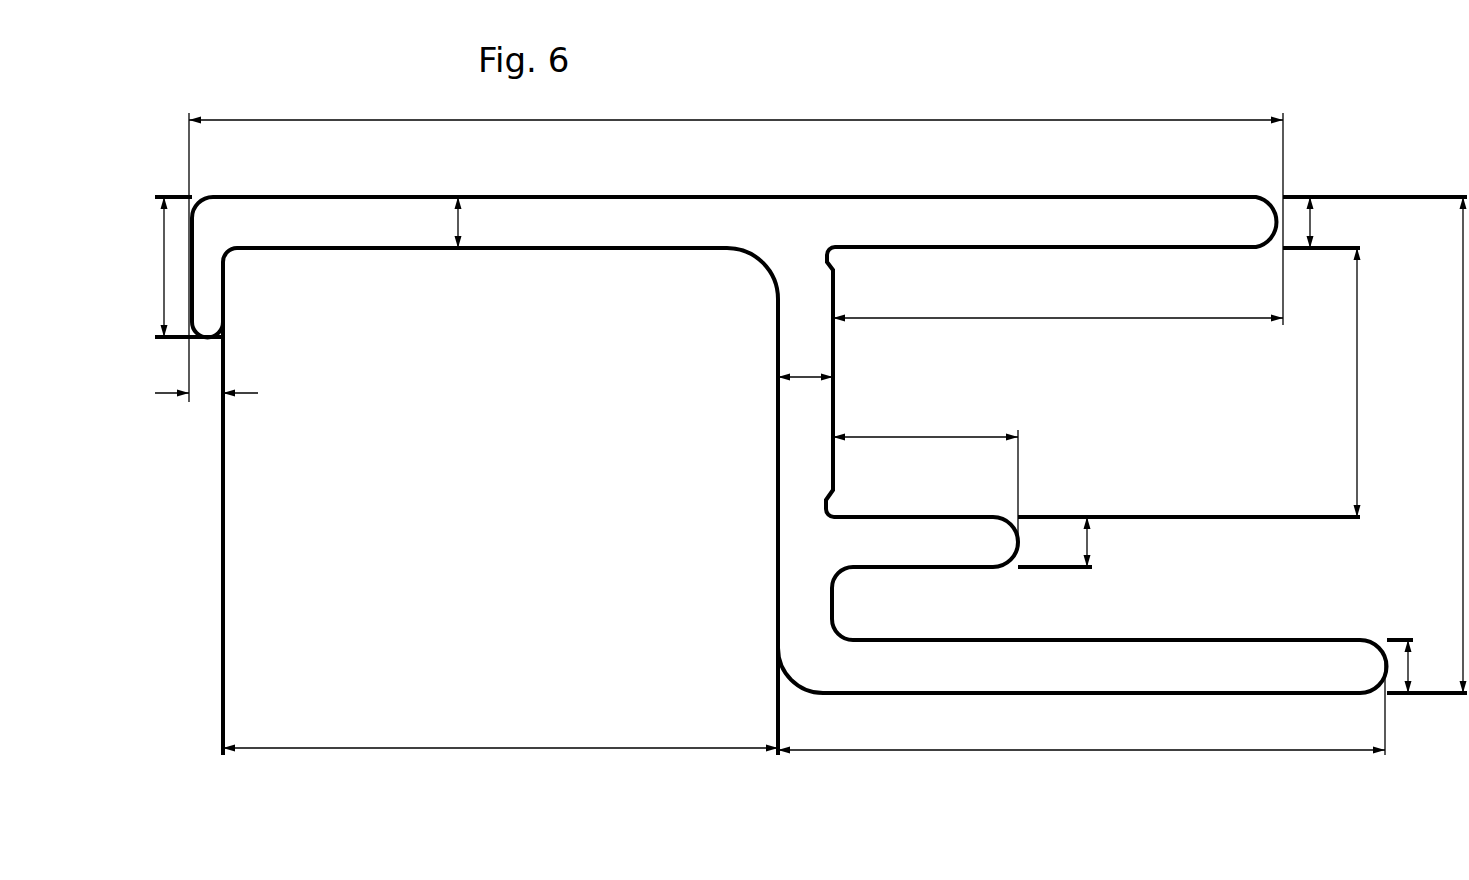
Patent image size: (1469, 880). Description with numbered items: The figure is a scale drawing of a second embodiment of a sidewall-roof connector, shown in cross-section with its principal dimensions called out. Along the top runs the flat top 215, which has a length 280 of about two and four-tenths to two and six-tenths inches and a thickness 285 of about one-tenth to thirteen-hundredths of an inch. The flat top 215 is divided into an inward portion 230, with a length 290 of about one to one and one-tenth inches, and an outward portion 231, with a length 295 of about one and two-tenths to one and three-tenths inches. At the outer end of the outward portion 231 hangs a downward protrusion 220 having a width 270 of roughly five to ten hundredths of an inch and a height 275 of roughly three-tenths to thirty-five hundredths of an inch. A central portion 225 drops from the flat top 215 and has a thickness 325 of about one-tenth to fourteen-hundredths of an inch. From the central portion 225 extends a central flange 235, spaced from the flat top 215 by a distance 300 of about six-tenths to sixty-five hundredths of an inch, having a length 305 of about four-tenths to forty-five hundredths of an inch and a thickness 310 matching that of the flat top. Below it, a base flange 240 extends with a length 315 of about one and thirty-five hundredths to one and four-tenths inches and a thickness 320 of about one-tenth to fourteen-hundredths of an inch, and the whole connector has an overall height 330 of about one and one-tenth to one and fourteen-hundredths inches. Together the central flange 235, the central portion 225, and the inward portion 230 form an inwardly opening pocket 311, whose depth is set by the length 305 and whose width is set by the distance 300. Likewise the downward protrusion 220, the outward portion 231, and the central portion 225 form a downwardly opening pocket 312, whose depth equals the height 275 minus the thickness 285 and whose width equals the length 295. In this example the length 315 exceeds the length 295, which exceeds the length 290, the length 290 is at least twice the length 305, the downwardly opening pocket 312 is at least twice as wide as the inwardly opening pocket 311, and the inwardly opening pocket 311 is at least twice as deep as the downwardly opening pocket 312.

The flat top 215 is at (625, 218).
The downward protrusion 220 is at (203, 280).
The central portion 225 is at (803, 434).
The inward portion 230 is at (1022, 222).
The outward portion 231 is at (313, 220).
The central flange 235 is at (920, 545).
The base flange 240 is at (1192, 678).
The width 270 is at (250, 396).
The height 275 is at (161, 277).
The length 280 is at (722, 118).
The thickness 285 is at (455, 225).
The length 290 is at (1050, 320).
The length 295 is at (460, 748).
The distance 300 is at (1352, 412).
The length 305 is at (952, 437).
The thickness 310 is at (1092, 543).
The inwardly opening pocket 311 is at (965, 383).
The downwardly opening pocket 312 is at (505, 290).
The length 315 is at (1072, 752).
The thickness 320 is at (1412, 675).
The thickness 325 is at (820, 373).
The overall height 330 is at (1462, 465).